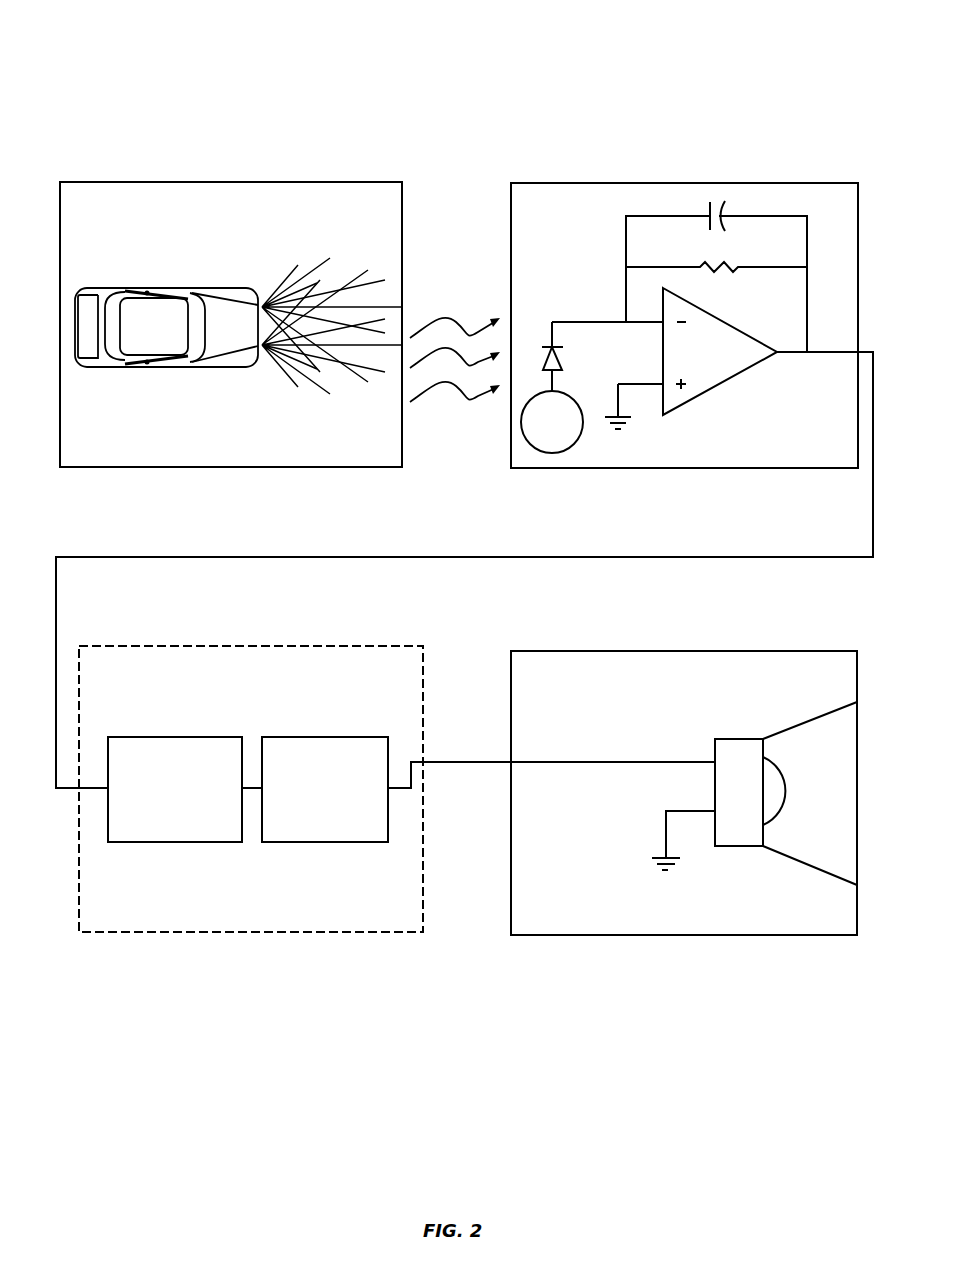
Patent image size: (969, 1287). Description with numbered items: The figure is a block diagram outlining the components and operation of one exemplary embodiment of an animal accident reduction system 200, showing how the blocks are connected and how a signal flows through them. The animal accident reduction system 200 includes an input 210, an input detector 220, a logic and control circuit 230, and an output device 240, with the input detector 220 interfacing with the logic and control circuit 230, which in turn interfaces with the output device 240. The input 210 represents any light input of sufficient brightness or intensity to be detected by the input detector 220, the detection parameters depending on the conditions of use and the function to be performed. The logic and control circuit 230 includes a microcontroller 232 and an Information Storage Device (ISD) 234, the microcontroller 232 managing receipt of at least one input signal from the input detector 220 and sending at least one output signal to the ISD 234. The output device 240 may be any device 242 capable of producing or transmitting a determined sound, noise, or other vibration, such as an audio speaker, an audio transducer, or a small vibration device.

The animal accident reduction system 200 is at (274, 47).
The input 210 is at (291, 159).
The input detector 220 is at (747, 166).
The logic and control circuit 230 is at (289, 628).
The microcontroller 232 is at (157, 733).
The Information Storage Device (ISD) 234 is at (304, 733).
The output device 240 is at (751, 628).
The device 242 is at (721, 735).